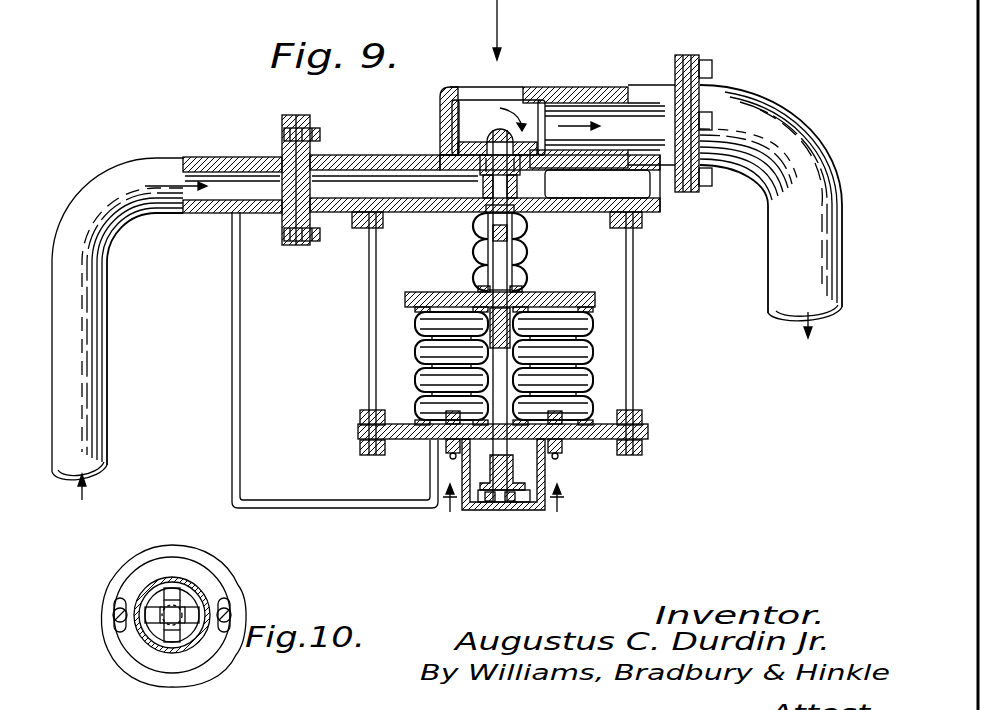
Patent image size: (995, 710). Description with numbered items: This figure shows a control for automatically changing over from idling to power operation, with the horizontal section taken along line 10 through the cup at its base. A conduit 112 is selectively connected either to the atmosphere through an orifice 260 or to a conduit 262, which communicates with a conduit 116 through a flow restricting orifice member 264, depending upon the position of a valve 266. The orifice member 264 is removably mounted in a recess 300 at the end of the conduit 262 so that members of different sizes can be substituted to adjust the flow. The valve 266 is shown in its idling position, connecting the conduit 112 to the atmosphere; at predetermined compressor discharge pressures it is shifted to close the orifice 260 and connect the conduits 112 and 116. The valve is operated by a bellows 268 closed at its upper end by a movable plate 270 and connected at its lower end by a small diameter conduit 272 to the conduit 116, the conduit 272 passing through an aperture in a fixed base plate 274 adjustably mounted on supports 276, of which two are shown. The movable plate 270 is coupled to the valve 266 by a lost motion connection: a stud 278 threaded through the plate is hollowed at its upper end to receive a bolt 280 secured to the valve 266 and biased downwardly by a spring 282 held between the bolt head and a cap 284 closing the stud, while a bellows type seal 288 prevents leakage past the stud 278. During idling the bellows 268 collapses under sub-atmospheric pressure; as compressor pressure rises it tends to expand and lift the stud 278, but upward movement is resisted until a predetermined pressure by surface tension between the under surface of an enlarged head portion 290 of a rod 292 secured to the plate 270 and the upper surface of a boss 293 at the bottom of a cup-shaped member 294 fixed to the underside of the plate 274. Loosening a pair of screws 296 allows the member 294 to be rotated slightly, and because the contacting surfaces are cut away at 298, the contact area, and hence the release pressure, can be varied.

In FIG. 9, the conduit 116 is at (100, 333).
In FIG. 9, the conduit 112 is at (772, 275).
In FIG. 9, the conduit 262 is at (405, 157).
In FIG. 9, the flow restricting orifice member 264 is at (330, 157).
In FIG. 9, the recess 300 is at (316, 147).
In FIG. 9, the valve 266 is at (478, 148).
In FIG. 9, the orifice 260 is at (535, 88).
In FIG. 9, the cap 284 is at (605, 128).
In FIG. 9, the bolt 280 is at (522, 186).
In FIG. 9, the spring 282 is at (492, 188).
In FIG. 9, the bellows type seal 288 is at (478, 256).
In FIG. 9, the stud 278 is at (524, 250).
In FIG. 9, the movable plate 270 is at (554, 300).
In FIG. 9, the bellows 268 is at (418, 352).
In FIG. 9, the rod 292 is at (510, 384).
In FIG. 10, the rod 292 is at (150, 645).
In FIG. 9, the supports 276 is at (368, 298).
In FIG. 9, the fixed base plate 274 is at (608, 440).
In FIG. 9, the cup-shaped member 294 is at (546, 471).
In FIG. 10, the cup-shaped member 294 is at (198, 586).
In FIG. 9, the enlarged head portion 290 is at (546, 482).
In FIG. 10, the enlarged head portion 290 is at (186, 612).
In FIG. 9, the boss 293 is at (528, 548).
In FIG. 9, the screws 296 is at (450, 458).
In FIG. 10, the screws 296 is at (224, 614).
In FIG. 9, the section line 10 is at (500, 506).
In FIG. 9, the conduit 272 is at (238, 428).
In FIG. 10, the cut away portions 298 is at (172, 596).